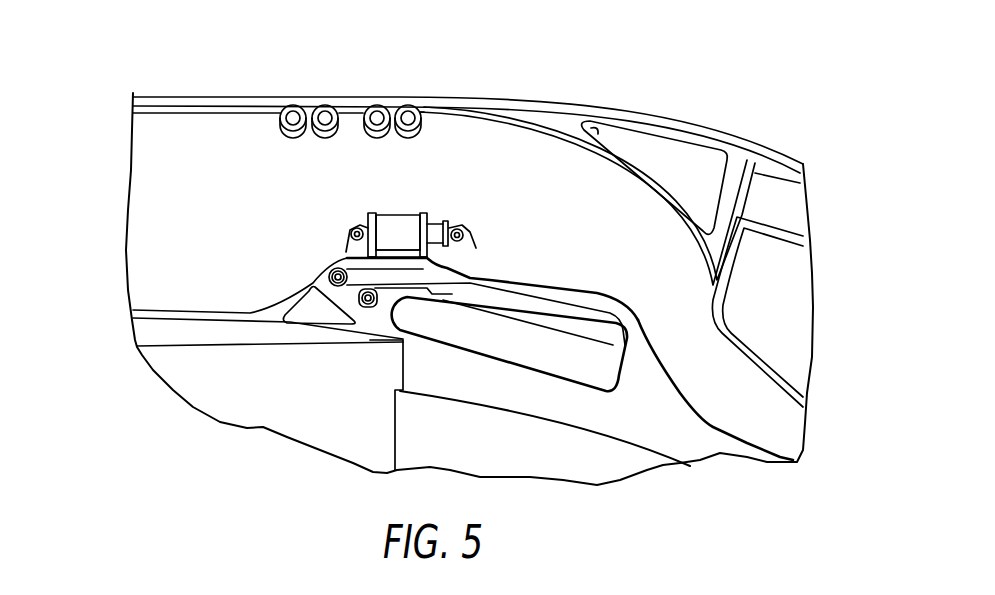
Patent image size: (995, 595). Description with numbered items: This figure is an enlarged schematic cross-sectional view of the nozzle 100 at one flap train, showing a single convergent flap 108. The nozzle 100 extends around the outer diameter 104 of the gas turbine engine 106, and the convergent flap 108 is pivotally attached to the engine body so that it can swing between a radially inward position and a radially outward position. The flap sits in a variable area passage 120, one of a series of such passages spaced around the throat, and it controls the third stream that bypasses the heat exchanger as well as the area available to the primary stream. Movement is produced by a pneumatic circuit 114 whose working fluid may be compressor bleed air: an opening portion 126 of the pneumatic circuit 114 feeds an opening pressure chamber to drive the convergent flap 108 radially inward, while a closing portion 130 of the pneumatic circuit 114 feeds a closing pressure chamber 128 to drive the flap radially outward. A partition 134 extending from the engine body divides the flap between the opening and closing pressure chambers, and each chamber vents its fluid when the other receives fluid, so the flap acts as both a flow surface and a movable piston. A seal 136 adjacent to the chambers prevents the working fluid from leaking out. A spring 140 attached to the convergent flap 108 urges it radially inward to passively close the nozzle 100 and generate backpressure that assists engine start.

The nozzle 100 is at (693, 108).
The outer diameter 104 is at (499, 97).
The gas turbine engine 106 is at (113, 84).
The convergent flap 108 is at (597, 427).
The pneumatic circuit 114 is at (282, 115).
The variable area passage 120 is at (412, 176).
The opening portion 126 is at (328, 273).
The closing pressure chamber 128 is at (523, 347).
The closing portion 130 is at (367, 309).
The partition 134 is at (597, 327).
The seal 136 is at (445, 263).
The spring 140 is at (388, 213).